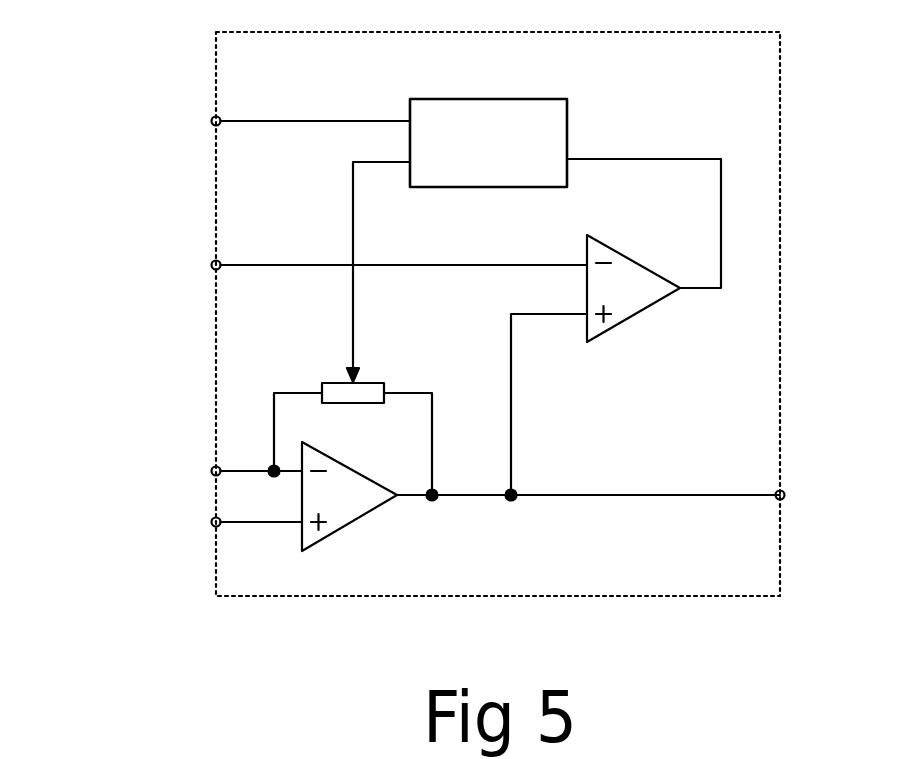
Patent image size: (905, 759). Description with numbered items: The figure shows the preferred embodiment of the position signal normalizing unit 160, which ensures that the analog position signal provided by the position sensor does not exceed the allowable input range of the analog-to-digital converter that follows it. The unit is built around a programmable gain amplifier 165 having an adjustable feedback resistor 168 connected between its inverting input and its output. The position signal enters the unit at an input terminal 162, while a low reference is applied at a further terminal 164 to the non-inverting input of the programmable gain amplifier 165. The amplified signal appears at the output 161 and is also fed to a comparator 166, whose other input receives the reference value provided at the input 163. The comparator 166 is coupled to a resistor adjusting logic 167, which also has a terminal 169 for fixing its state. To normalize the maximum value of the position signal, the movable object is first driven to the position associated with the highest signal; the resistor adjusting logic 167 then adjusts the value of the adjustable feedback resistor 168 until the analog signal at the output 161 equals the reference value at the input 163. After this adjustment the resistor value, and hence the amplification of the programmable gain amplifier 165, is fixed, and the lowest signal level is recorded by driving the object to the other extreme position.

The position signal normalizing unit 160 is at (572, 598).
The output 161 is at (783, 489).
The input terminal INPUT 162 is at (214, 467).
The input 163 is at (213, 261).
The reference low input REF_LOW 164 is at (214, 517).
The programmable gain amplifier 165 is at (338, 528).
The comparator 166 is at (628, 315).
The resistor adjusting logic 167 is at (491, 95).
The adjustable feedback resistor 168 is at (329, 378).
The fix input terminal FIX 169 is at (213, 117).